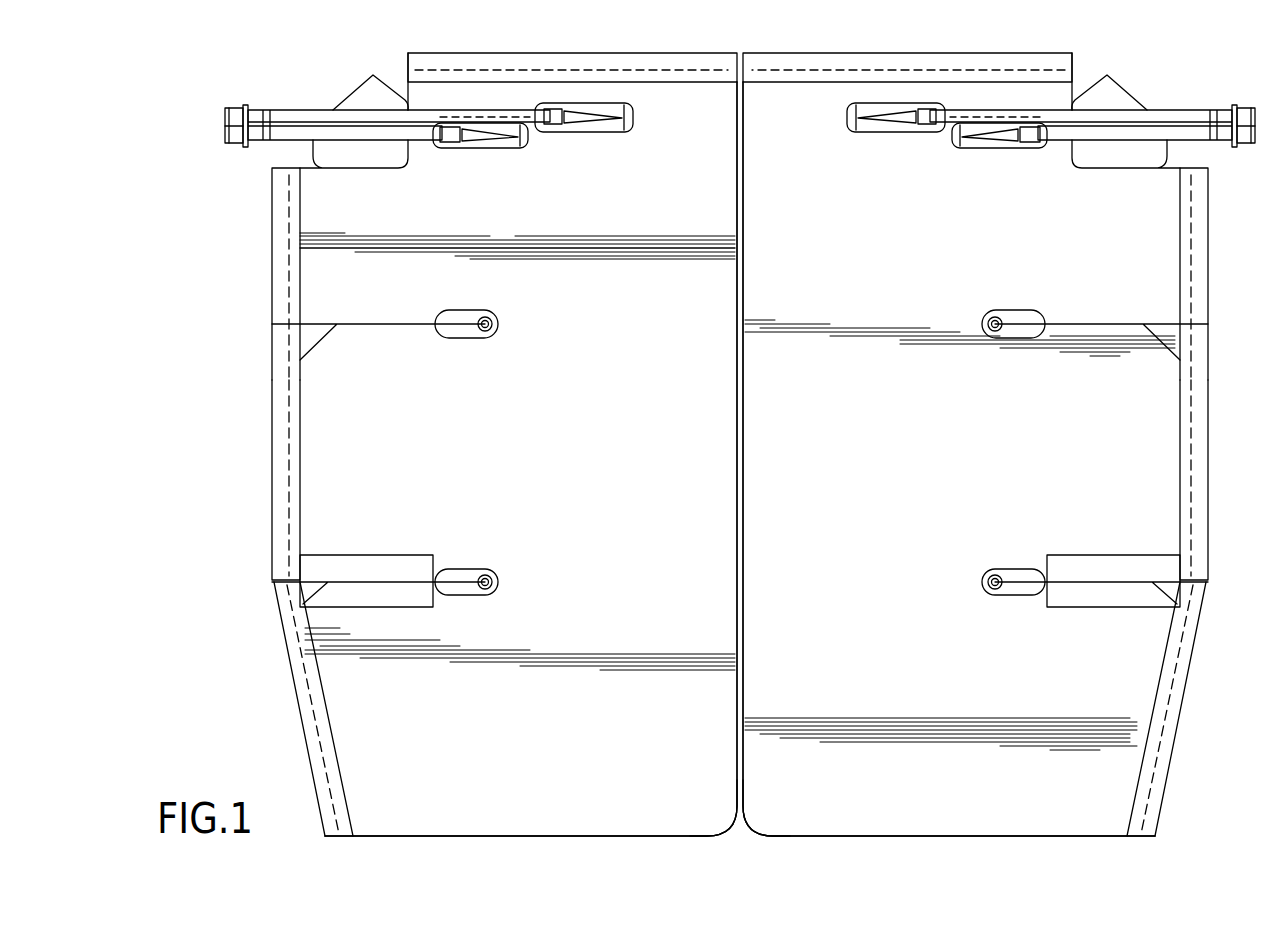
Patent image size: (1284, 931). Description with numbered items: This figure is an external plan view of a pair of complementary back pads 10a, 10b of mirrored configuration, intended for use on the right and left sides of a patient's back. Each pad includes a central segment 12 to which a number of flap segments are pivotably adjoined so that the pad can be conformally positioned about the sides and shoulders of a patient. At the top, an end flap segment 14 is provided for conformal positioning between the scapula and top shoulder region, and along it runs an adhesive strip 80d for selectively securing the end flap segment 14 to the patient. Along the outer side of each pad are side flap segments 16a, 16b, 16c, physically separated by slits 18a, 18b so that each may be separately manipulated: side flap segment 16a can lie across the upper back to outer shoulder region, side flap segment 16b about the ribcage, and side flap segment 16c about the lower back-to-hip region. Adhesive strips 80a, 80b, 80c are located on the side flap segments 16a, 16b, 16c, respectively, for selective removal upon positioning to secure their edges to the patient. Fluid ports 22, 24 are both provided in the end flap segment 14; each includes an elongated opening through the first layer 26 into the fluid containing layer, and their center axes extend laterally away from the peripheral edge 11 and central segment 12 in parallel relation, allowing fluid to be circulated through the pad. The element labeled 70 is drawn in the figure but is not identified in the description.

The right back pad 10a is at (1170, 68).
The left back pad 10b is at (205, 133).
The peripheral edge 11 is at (733, 793).
The central segment 12 is at (408, 620).
The end flap segment 14 is at (445, 93).
The side flap segment 16a is at (315, 303).
The side flap segment 16b is at (308, 505).
The side flap segment 16c is at (357, 767).
The slit 18a is at (300, 360).
The slit 18b is at (305, 600).
The fluid port 22 is at (512, 148).
The fluid port 24 is at (570, 132).
The first layer 26 is at (552, 420).
The latch rod assembly 70 is at (350, 93).
The adhesive strip 80a is at (273, 182).
The adhesive strip 80b is at (272, 432).
The adhesive strip 80c is at (282, 640).
The adhesive strip 80d is at (522, 65).